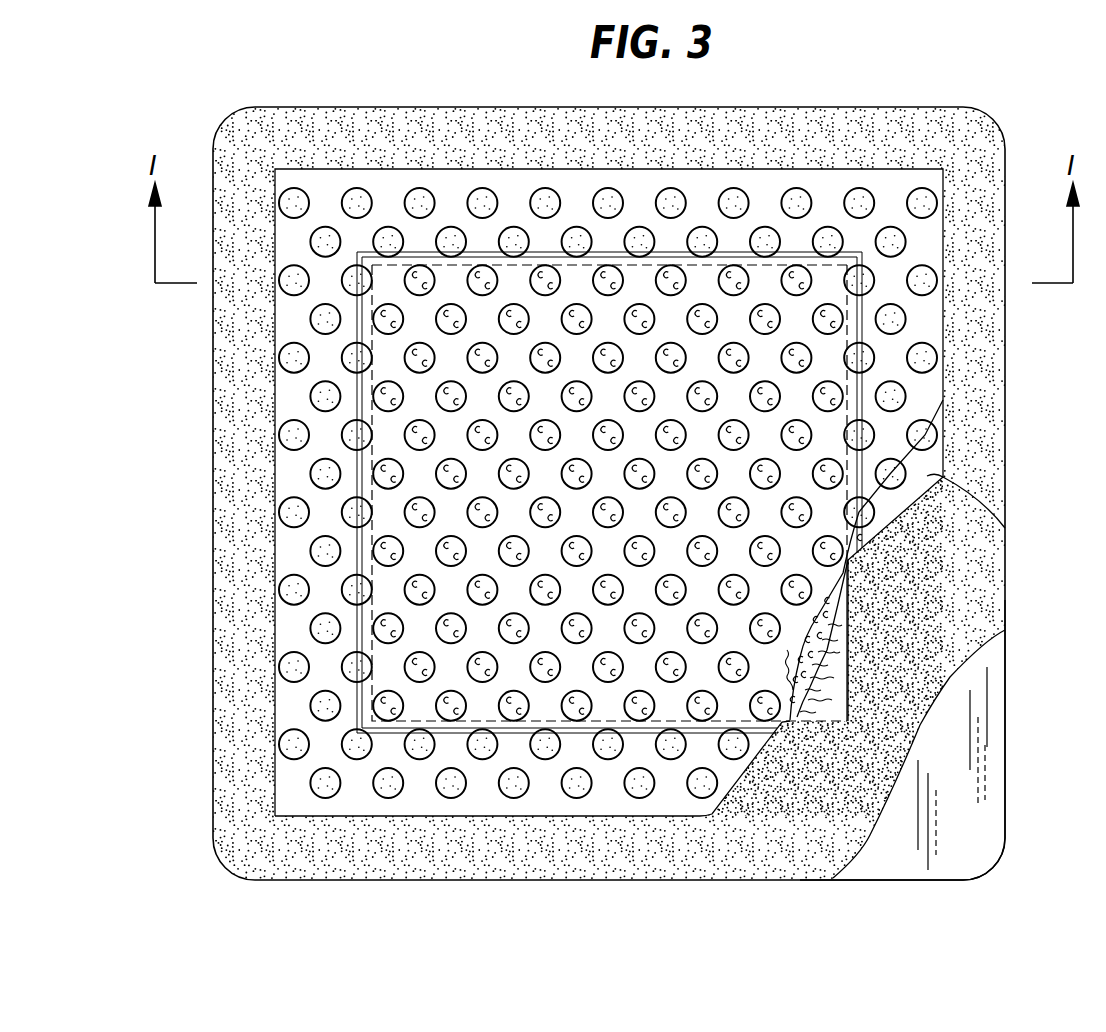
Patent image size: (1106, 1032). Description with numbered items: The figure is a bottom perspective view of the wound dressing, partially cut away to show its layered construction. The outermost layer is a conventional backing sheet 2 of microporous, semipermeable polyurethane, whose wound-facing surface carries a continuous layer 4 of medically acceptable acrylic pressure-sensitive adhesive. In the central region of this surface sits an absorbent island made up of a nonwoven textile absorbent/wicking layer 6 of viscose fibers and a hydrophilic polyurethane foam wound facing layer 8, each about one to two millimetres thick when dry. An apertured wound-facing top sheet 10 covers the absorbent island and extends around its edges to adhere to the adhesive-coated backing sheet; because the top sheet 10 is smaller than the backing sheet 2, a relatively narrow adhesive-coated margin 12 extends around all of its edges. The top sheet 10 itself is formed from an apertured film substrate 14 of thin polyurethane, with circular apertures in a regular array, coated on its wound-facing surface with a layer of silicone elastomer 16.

The backing sheet 2 is at (997, 832).
The continuous layer of pressure-sensitive adhesive 4 is at (930, 698).
The absorbent/wicking layer 6 is at (832, 710).
The polyurethane foam wound facing layer 8 is at (783, 718).
The apertured wound-facing top sheet 10 is at (655, 476).
The adhesive-coated margin 12 is at (990, 424).
The apertured film substrate 14 is at (1003, 522).
The layer of silicone elastomer 16 is at (497, 176).